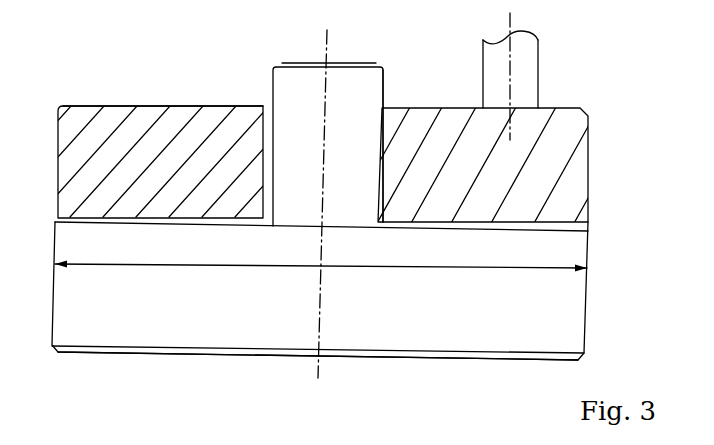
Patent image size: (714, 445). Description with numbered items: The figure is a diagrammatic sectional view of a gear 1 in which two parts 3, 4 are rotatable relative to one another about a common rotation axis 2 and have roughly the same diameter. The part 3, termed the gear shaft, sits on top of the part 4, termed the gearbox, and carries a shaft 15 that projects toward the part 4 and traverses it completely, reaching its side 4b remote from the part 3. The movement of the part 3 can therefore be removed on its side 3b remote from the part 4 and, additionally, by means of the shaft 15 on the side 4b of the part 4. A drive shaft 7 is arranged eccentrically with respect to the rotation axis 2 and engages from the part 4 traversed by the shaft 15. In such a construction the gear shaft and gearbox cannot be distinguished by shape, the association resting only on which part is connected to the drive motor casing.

The gear 1 is at (224, 66).
The rotation axis 2 is at (329, 40).
The gear shaft 3 is at (578, 150).
The side of part 3 remote from part 4 3b is at (90, 106).
The gearbox 4 is at (576, 292).
The side of part 4 remote from part 3 4b is at (88, 356).
The drive shaft 7 is at (538, 72).
The shaft 15 is at (371, 87).